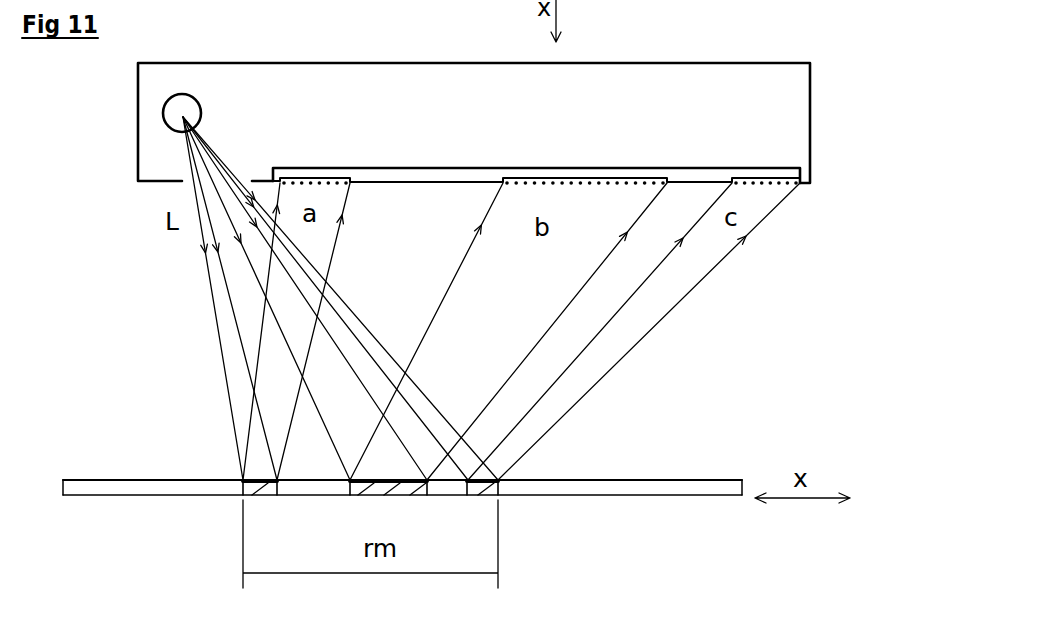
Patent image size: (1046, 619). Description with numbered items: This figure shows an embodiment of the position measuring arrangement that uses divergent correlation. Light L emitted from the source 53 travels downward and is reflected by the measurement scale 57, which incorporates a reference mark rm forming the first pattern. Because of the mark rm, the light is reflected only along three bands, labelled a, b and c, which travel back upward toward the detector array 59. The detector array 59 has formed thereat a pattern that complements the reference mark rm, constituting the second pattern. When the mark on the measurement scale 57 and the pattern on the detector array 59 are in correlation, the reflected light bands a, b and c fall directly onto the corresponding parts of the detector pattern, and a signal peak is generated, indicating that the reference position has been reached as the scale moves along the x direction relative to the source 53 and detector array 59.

The source 53 is at (191, 96).
The detector array 59 is at (487, 178).
The measurement scale 57 is at (597, 487).